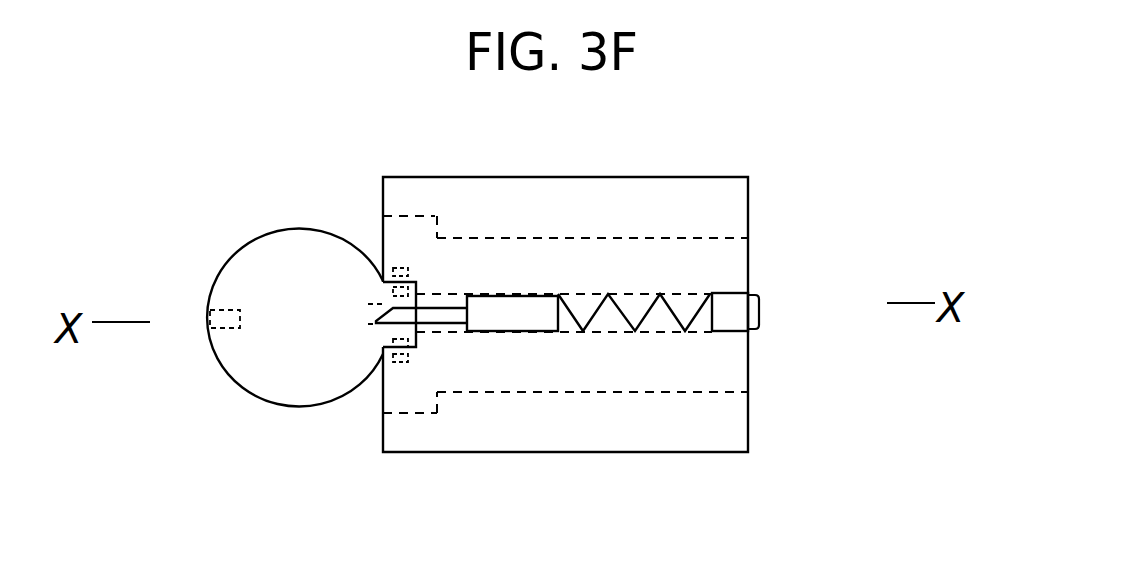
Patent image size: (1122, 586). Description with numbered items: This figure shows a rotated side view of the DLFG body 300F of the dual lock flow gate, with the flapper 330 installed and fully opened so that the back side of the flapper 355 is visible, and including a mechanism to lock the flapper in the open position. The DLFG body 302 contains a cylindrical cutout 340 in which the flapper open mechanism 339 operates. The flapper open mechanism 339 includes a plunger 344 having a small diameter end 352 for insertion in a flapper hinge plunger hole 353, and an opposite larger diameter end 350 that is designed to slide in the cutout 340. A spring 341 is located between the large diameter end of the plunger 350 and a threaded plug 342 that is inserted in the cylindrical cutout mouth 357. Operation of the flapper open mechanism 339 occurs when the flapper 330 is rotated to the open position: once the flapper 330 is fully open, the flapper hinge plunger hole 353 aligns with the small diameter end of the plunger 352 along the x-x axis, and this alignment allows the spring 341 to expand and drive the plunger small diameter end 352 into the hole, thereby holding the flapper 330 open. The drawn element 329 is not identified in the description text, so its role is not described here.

The DLFG body 300F is at (773, 104).
The DLFG body 302 is at (656, 177).
The outlet port 329 is at (225, 330).
The flapper 330 is at (229, 270).
The flapper open mechanism 339 is at (621, 362).
The cylindrical cutout 340 is at (685, 290).
The spring 341 is at (682, 318).
The threaded plug 342 is at (732, 313).
The plunger 344 is at (517, 360).
The larger diameter end of the plunger 350 is at (515, 318).
The small diameter end of the plunger 352 is at (435, 316).
The flapper hinge plunger hole 353 is at (372, 312).
The back side of the flapper 355 is at (305, 353).
The cylindrical cutout mouth 357 is at (750, 293).